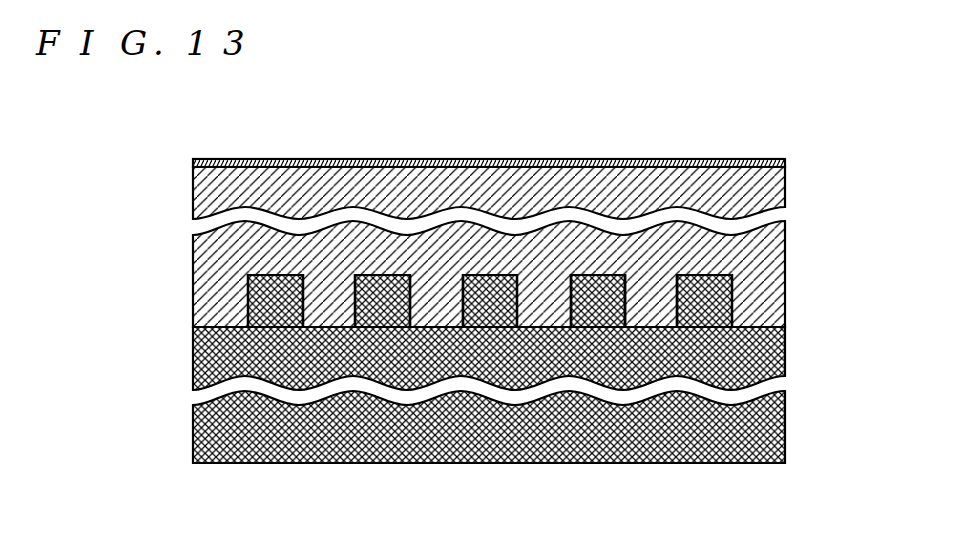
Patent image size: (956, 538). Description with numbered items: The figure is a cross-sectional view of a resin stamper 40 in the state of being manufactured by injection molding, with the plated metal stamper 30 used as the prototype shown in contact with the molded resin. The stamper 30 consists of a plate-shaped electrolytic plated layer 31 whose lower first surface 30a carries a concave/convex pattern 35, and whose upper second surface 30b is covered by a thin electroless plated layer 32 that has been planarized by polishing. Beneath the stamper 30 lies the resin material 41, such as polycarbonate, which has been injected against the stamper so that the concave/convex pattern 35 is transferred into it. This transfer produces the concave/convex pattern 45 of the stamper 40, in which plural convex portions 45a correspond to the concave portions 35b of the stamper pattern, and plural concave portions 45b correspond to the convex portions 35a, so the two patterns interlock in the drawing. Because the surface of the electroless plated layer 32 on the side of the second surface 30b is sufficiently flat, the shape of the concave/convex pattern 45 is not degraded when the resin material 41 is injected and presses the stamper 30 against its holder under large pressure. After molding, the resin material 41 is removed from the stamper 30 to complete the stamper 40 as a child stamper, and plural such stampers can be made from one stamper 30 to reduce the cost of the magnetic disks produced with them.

The stamper 30 is at (481, 213).
The first surface 30a is at (214, 325).
The second surface 30b is at (214, 148).
The electrolytic plated layer 31 is at (778, 250).
The electroless plated layer 32 is at (778, 153).
The concave/convex pattern 35 is at (527, 320).
The convex portion 35a is at (644, 293).
The concave portion 35b is at (594, 297).
The stamper 40 is at (481, 404).
The resin material 41 is at (778, 406).
The concave/convex pattern 45 is at (496, 267).
The convex portion 45a is at (378, 267).
The concave portion 45b is at (427, 284).